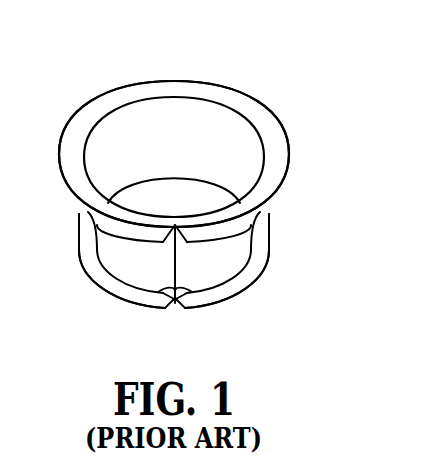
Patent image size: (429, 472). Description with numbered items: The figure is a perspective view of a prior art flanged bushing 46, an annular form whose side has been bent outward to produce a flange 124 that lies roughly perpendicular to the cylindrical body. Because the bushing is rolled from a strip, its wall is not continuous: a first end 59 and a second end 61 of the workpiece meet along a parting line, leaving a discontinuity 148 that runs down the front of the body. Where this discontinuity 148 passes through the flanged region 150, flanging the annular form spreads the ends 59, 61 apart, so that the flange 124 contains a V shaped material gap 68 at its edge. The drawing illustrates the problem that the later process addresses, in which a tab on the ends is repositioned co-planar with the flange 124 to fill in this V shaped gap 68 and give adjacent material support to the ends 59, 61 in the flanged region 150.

The flanged bushing 46 is at (305, 102).
The flange 124 is at (278, 177).
The flanged region 150 is at (146, 333).
The discontinuity 148 is at (178, 263).
The second end 61 is at (158, 294).
The first end 59 is at (200, 294).
The V shaped material gap 68 is at (183, 307).